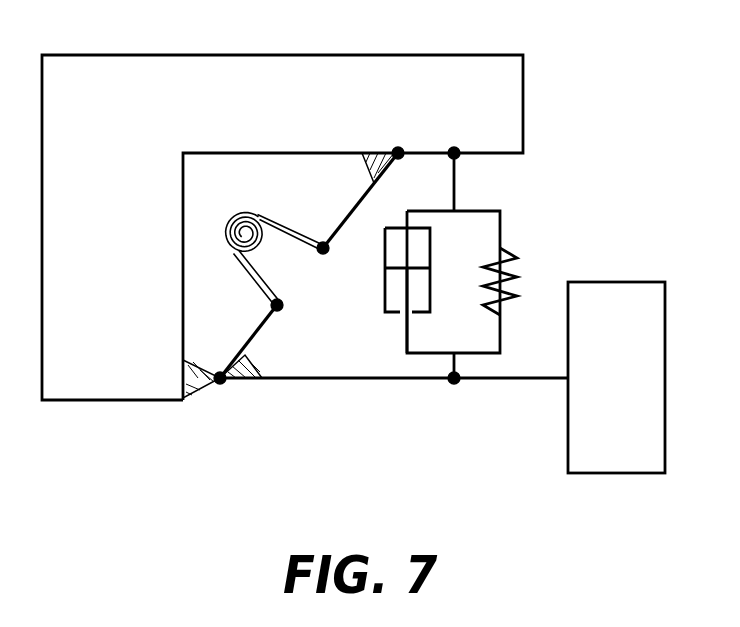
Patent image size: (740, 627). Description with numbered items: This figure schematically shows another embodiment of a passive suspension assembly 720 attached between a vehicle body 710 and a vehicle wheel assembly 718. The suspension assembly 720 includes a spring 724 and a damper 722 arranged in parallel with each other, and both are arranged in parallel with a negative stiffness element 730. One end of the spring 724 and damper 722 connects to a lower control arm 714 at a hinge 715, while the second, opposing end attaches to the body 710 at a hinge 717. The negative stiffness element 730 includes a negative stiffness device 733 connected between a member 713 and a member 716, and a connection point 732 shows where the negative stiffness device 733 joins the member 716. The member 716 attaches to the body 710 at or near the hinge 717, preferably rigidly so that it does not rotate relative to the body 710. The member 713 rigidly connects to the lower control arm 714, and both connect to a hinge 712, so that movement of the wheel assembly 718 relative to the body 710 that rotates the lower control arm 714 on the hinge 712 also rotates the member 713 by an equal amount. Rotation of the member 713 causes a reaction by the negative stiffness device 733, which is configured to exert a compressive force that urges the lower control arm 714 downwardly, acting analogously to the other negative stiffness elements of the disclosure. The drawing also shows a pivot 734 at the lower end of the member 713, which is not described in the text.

The vehicle body 710 is at (282, 227).
The hinge 712 is at (248, 470).
The member 713 is at (257, 333).
The lower control arm 714 is at (510, 445).
The hinge 715 is at (427, 470).
The member 716 is at (358, 207).
The hinge 717 is at (445, 90).
The vehicle wheel assembly 718 is at (616, 377).
The suspension assembly 720 is at (518, 240).
The damper 722 is at (433, 242).
The spring 724 is at (567, 273).
The negative stiffness element 730 is at (205, 206).
The connection point 732 is at (320, 241).
The negative stiffness device 733 is at (268, 247).
The lower pivot 734 is at (283, 312).